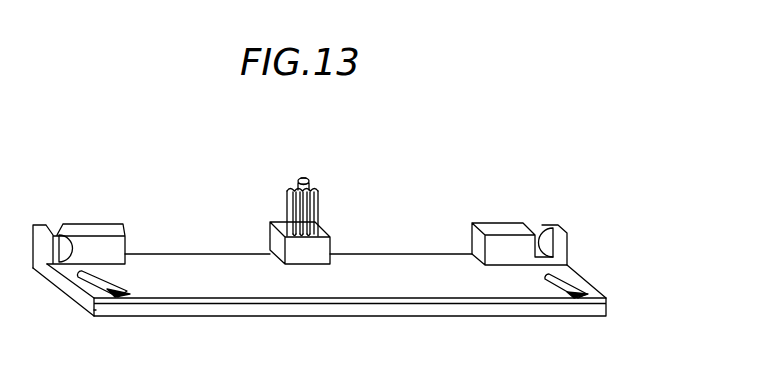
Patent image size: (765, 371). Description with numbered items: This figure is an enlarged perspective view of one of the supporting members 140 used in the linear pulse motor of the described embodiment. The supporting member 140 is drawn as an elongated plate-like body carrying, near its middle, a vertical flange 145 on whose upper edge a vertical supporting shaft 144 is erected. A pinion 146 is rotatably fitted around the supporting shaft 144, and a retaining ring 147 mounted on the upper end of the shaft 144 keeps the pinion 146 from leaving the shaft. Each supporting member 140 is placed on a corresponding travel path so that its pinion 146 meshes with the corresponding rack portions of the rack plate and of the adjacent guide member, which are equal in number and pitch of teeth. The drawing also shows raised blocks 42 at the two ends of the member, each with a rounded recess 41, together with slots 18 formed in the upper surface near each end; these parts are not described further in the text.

The supporting member 140 is at (403, 290).
The locating block 42 is at (105, 229).
The locating pin 41 is at (63, 246).
The slot 18 is at (108, 282).
The vertical supporting shaft 144 is at (304, 179).
The vertical flange 145 is at (332, 246).
The pinion 146 is at (286, 208).
The retaining ring 147 is at (310, 185).